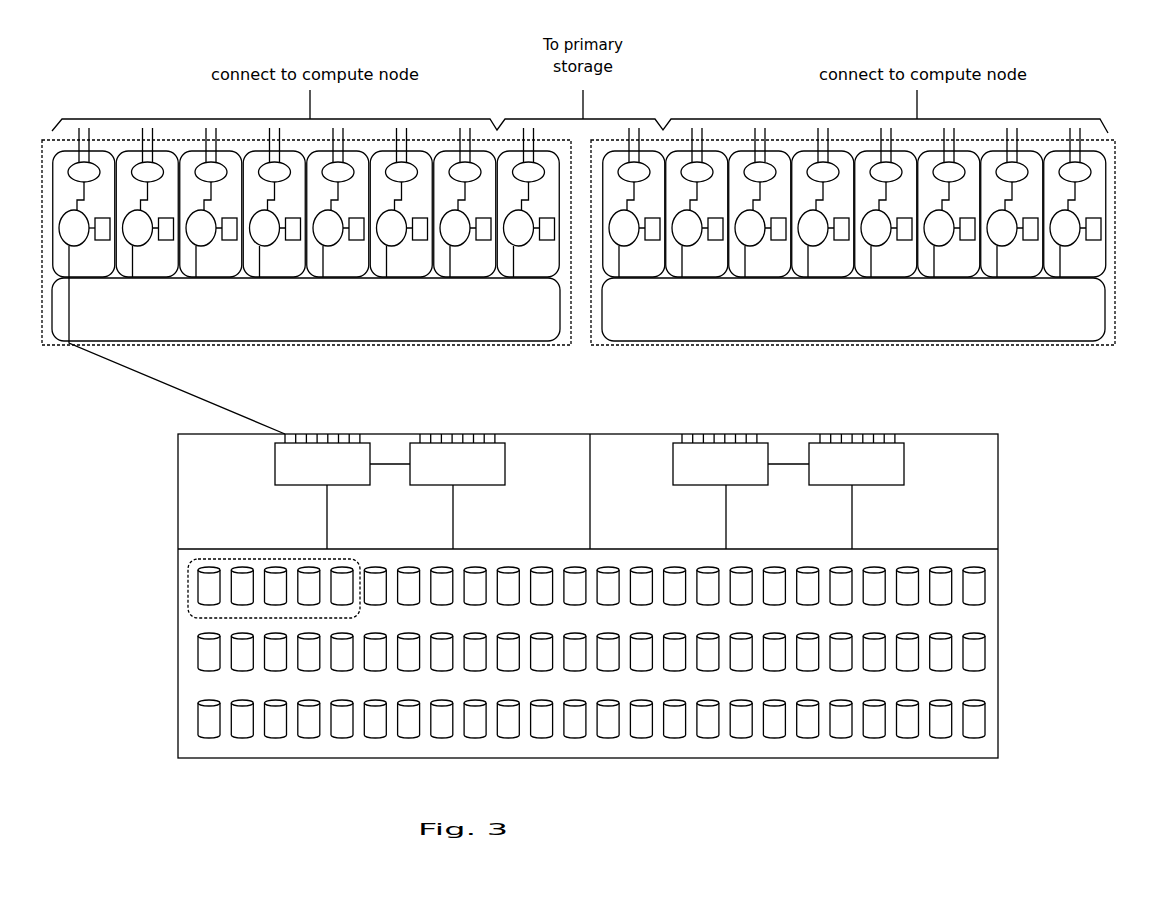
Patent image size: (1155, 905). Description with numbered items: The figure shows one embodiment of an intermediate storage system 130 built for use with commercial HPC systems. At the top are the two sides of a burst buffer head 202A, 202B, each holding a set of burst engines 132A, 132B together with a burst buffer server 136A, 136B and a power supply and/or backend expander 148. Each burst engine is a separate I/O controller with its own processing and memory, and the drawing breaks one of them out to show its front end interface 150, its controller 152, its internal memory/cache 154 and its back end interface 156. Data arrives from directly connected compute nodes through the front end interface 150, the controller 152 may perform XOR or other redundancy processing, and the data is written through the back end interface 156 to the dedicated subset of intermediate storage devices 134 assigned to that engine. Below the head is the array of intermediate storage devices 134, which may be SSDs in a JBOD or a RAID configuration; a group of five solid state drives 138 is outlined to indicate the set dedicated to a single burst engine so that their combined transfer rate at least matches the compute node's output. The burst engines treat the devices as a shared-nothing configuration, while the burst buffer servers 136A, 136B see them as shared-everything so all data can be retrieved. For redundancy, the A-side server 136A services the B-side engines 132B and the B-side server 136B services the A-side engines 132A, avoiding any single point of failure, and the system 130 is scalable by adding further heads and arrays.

The intermediate storage system 130 is at (175, 661).
The burst engines 132A is at (100, 151).
The burst engines 132B is at (711, 151).
The intermediate storage devices 134 is at (205, 739).
The burst buffer server 136A is at (558, 152).
The burst buffer server 136B is at (607, 152).
The solid state drives 138 is at (183, 592).
The power supply and/or backend expander 148 is at (293, 316).
The front end interface 150 is at (66, 166).
The controller 152 is at (86, 237).
The internal memory/cache 154 is at (102, 241).
The back end interface 156 is at (69, 258).
The burst buffer head 202A is at (338, 345).
The burst buffer head 202B is at (789, 346).